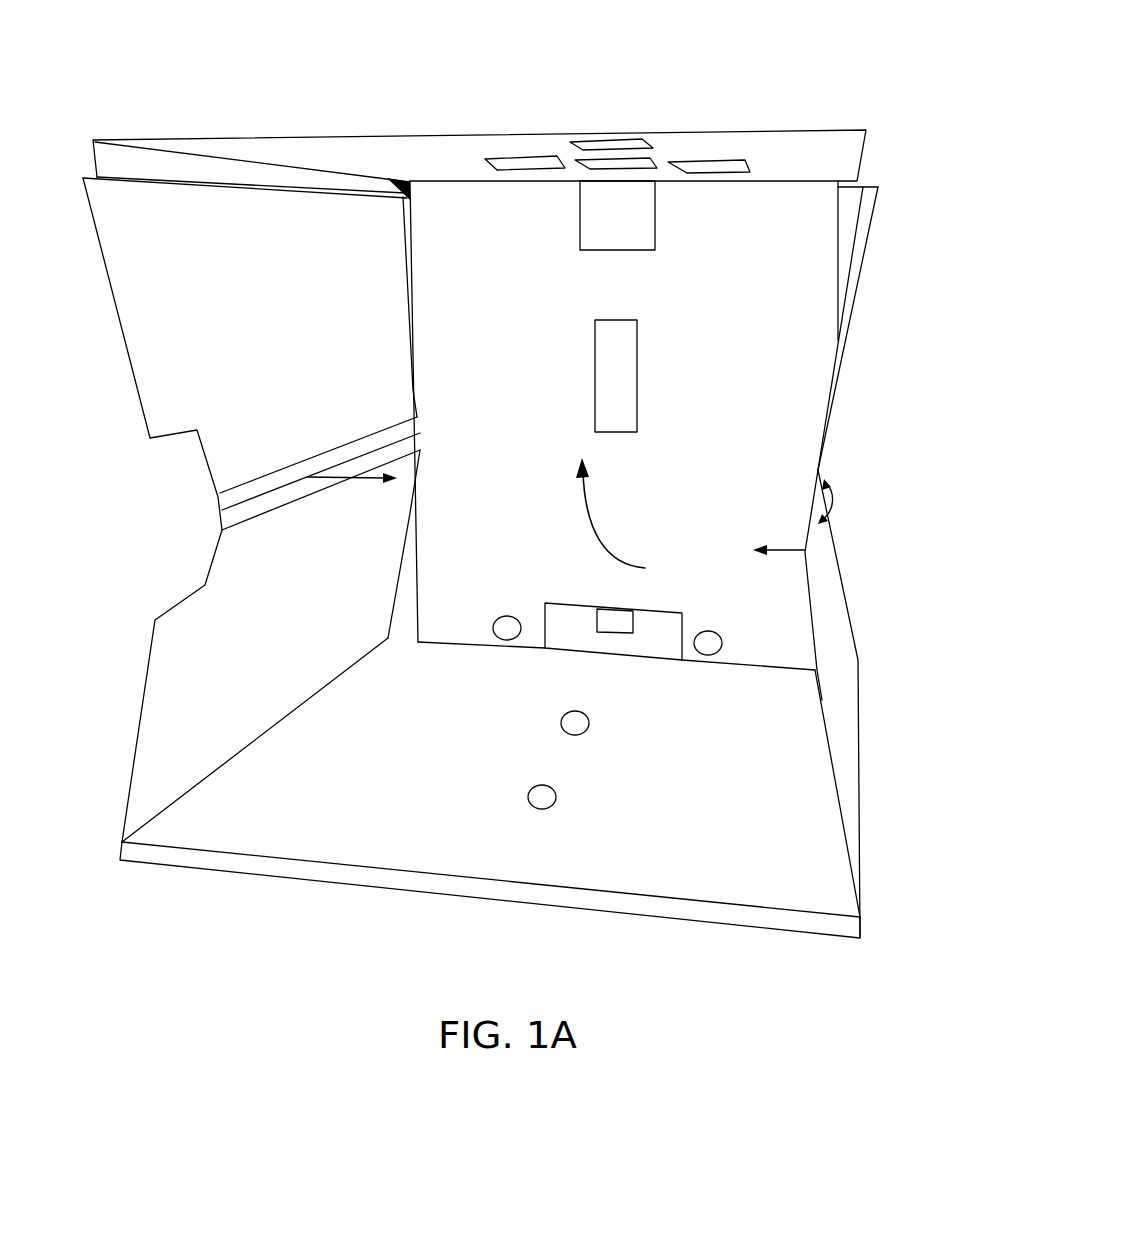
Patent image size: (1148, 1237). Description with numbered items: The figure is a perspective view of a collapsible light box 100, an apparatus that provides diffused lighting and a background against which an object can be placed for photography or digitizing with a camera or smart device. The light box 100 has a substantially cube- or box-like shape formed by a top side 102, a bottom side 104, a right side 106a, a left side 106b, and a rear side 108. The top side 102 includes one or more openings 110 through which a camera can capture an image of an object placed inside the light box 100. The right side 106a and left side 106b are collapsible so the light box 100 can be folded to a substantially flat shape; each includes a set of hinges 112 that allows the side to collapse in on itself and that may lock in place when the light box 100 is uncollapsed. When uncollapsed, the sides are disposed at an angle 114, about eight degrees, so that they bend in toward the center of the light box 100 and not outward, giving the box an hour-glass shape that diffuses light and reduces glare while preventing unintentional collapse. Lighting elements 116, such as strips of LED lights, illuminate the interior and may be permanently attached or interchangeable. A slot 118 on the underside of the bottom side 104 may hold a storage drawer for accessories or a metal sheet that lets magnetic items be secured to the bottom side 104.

The collapsible light box 100 is at (165, 45).
The top side 102 is at (370, 152).
The bottom side 104 is at (523, 857).
The right side 106a is at (204, 326).
The left side 106b is at (815, 571).
The rear side 108 is at (681, 372).
The openings 110 is at (736, 164).
The hinges 112 is at (218, 500).
The angle 114 is at (836, 503).
The lighting elements 116 is at (167, 165).
The slot 118 is at (838, 927).